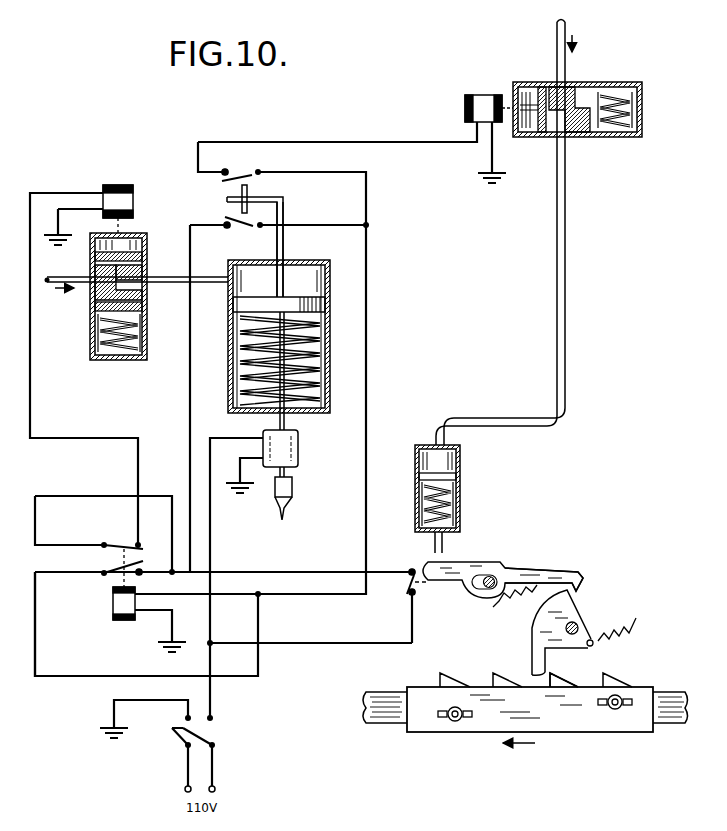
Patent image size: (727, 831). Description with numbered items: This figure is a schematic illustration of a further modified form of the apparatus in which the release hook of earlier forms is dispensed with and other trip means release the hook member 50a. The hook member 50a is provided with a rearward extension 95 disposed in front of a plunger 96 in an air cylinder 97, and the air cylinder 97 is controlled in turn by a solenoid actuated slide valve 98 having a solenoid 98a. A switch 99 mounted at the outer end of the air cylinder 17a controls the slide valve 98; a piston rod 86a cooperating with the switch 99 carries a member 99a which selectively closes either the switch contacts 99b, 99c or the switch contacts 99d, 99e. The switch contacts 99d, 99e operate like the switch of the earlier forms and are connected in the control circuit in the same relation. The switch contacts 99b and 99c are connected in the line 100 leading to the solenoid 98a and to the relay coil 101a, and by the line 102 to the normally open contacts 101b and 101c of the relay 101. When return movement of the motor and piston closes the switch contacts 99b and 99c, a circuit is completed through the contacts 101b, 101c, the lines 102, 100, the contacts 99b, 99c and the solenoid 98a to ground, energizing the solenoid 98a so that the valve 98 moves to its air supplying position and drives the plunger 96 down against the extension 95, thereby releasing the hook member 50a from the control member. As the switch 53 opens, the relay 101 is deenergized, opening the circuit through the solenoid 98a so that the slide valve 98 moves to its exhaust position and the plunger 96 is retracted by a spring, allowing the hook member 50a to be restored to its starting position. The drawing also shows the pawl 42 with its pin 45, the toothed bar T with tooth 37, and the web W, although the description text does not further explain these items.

The switch 99 is at (290, 189).
The member 99a is at (227, 198).
The switch contact 99b is at (225, 169).
The switch contact 99c is at (250, 170).
The switch contact 99d is at (224, 229).
The switch contact 99e is at (245, 228).
The piston rod 86a is at (286, 243).
The line 100 is at (367, 337).
The air cylinder 17a is at (321, 425).
The relay 101 is at (100, 583).
The relay coil 101a is at (117, 605).
The normally open contact 101b is at (102, 568).
The normally open contact 101c is at (140, 575).
The line 102 is at (65, 678).
The solenoid actuated slide valve 98 is at (612, 82).
The solenoid 98a is at (483, 93).
The air cylinder 97 is at (458, 486).
The plunger 96 is at (433, 547).
The rearward extension 95 is at (460, 563).
The hook member 50a is at (532, 573).
The switch 53 is at (399, 603).
The pawl 42 is at (577, 613).
The pivot pin 45 is at (545, 626).
The ratchet tooth 37 is at (560, 680).
The ratchet bar T is at (592, 718).
The web W is at (378, 718).